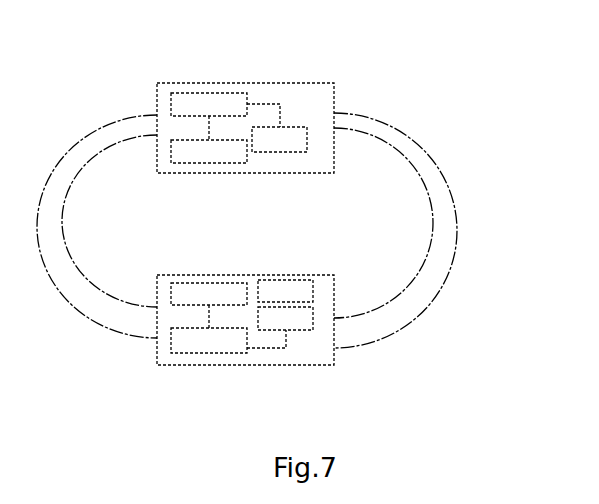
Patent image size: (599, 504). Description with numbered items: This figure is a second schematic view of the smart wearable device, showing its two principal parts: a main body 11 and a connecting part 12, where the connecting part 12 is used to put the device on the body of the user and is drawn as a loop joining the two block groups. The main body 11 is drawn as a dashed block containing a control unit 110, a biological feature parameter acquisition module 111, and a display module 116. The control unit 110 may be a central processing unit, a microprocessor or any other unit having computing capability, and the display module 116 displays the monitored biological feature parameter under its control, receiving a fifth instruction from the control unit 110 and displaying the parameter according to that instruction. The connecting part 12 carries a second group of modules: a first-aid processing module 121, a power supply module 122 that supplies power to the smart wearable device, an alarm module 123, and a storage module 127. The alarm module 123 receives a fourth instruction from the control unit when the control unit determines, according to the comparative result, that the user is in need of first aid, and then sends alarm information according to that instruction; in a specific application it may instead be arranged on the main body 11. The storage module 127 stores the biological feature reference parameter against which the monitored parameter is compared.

The main body 11 is at (286, 125).
The control unit 110 is at (233, 93).
The biological feature parameter acquisition module 111 is at (213, 163).
The display module 116 is at (305, 128).
The connecting part 12 is at (442, 173).
The first-aid processing module 121 is at (210, 283).
The power supply module 122 is at (208, 353).
The alarm module 123 is at (303, 330).
The storage module 127 is at (288, 280).